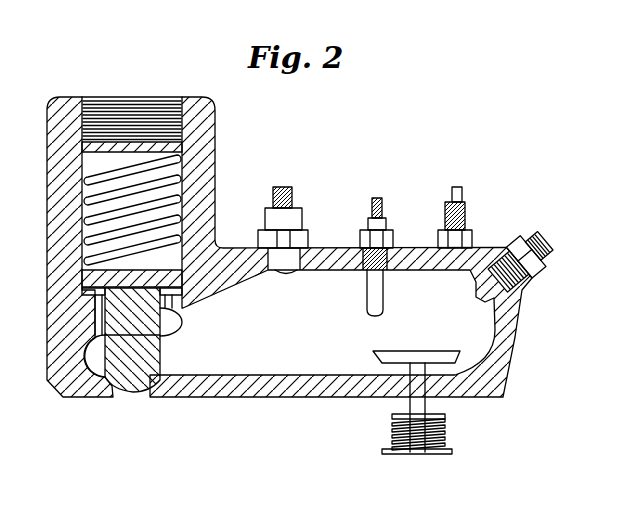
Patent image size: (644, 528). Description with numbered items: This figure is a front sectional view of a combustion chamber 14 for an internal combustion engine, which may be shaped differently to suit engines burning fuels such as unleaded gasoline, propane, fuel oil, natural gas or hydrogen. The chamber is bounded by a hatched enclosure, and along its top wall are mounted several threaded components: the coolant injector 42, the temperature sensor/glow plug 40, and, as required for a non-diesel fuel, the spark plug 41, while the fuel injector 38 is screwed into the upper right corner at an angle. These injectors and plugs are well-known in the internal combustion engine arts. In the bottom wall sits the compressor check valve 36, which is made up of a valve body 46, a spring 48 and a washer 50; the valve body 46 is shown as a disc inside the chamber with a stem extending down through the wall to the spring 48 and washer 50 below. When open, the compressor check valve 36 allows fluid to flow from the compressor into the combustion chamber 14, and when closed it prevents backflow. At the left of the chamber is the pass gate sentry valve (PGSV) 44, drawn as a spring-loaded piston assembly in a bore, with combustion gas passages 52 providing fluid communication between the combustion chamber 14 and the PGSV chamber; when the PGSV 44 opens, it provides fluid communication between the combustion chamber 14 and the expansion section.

The combustion chamber 14 is at (513, 372).
The compressor check valve 36 is at (427, 461).
The fuel injector 38 is at (538, 231).
The temperature sensor/glow plug 40 is at (387, 220).
The spark plug 41 is at (457, 187).
The coolant injector 42 is at (302, 214).
The pass gate sentry valve (PGSV) 44 is at (197, 212).
The valve body 46 is at (368, 351).
The spring 48 is at (445, 438).
The washer 50 is at (384, 452).
The combustion gas passages 52 is at (95, 318).